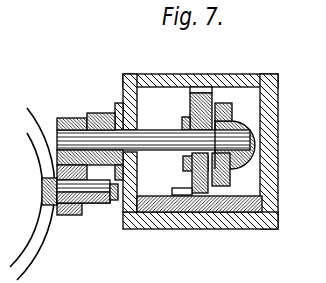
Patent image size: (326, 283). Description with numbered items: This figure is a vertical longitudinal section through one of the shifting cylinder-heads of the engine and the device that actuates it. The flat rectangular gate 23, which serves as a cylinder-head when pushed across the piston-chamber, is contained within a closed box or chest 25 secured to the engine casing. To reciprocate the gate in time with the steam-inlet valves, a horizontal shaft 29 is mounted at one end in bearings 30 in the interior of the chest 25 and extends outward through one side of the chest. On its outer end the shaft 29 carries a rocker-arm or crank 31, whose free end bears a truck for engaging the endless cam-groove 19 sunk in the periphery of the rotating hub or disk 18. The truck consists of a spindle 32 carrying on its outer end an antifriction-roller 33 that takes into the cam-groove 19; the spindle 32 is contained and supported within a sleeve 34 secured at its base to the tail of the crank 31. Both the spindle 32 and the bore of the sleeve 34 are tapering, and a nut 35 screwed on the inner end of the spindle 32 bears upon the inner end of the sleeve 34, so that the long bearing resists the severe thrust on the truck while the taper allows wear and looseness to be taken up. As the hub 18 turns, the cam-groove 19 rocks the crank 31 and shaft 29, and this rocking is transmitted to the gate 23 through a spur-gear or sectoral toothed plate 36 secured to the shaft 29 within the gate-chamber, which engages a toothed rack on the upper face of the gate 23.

The hub or disk 18 is at (32, 194).
The cam-groove 19 is at (55, 174).
The gate 23 is at (235, 207).
The chest 25 is at (205, 151).
The horizontal shaft 29 is at (153, 143).
The bearings 30 is at (223, 103).
The rocker-arm or crank 31 is at (71, 118).
The spindle 32 is at (102, 204).
The antifriction-roller 33 is at (56, 180).
The sleeve 34 is at (93, 203).
The nut 35 is at (114, 201).
The spur-gear or sectoral toothed plate 36 is at (202, 187).